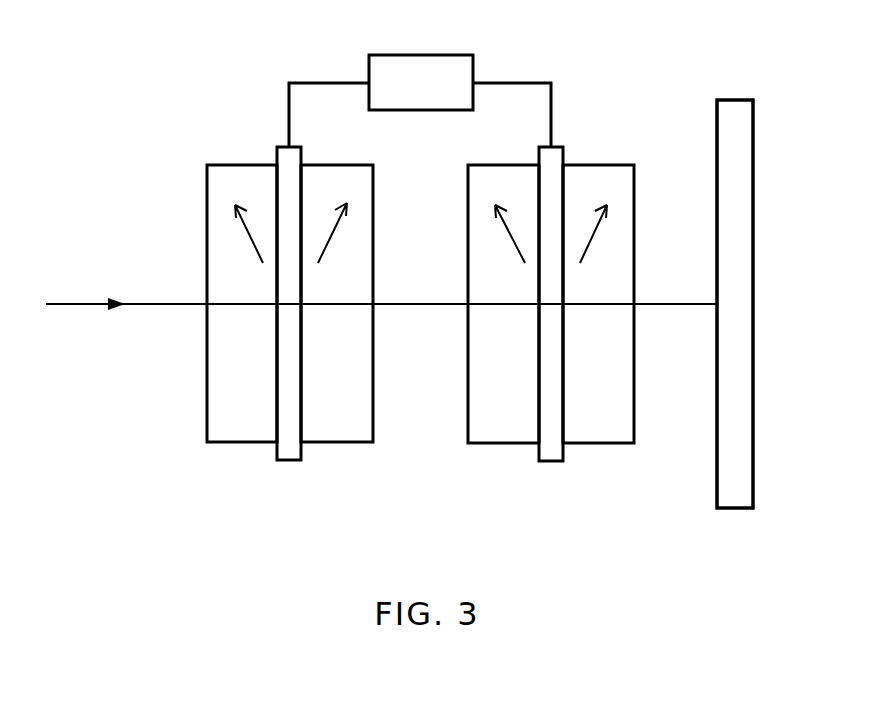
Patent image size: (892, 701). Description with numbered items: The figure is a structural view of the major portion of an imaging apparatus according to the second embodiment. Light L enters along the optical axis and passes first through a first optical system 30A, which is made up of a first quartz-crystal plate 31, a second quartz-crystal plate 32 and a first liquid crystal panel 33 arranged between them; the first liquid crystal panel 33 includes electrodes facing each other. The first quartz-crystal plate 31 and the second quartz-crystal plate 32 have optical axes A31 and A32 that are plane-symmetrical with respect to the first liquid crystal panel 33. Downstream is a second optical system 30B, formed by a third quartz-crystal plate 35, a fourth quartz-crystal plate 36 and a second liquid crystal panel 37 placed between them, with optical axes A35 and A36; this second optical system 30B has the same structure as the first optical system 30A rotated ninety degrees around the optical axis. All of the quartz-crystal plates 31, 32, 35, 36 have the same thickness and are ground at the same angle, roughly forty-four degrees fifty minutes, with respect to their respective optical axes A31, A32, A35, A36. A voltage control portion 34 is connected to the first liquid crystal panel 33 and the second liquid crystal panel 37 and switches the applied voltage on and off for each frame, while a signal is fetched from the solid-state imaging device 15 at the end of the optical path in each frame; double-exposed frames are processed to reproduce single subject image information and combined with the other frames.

The solid-state imaging device 15 is at (747, 187).
The first optical system 30A is at (290, 361).
The second optical system 30B is at (551, 361).
The first quartz-crystal plate 31 is at (238, 433).
The second quartz-crystal plate 32 is at (344, 433).
The first liquid crystal panel 33 is at (286, 339).
The voltage control portion 34 is at (425, 65).
The third quartz-crystal plate 35 is at (500, 433).
The fourth quartz-crystal plate 36 is at (606, 433).
The second liquid crystal panel 37 is at (551, 450).
The light beam L is at (78, 307).
The optical axis of the first quartz-crystal plate A31 is at (246, 235).
The optical axis of the second quartz-crystal plate A32 is at (333, 232).
The optical axis of the third quartz-crystal plate A35 is at (513, 243).
The optical axis of the fourth quartz-crystal plate A36 is at (590, 245).